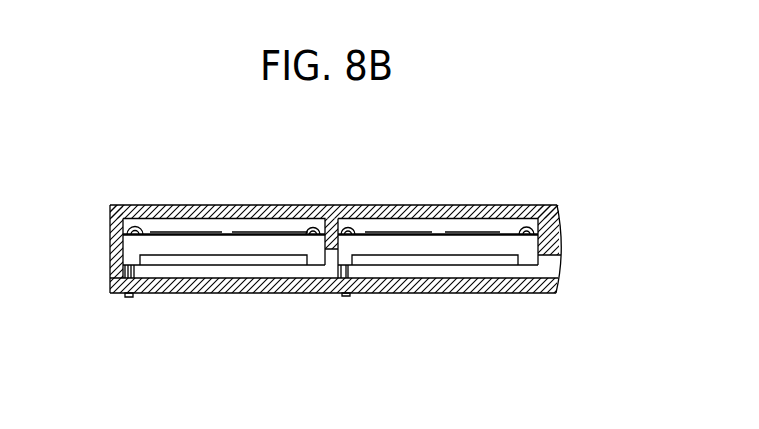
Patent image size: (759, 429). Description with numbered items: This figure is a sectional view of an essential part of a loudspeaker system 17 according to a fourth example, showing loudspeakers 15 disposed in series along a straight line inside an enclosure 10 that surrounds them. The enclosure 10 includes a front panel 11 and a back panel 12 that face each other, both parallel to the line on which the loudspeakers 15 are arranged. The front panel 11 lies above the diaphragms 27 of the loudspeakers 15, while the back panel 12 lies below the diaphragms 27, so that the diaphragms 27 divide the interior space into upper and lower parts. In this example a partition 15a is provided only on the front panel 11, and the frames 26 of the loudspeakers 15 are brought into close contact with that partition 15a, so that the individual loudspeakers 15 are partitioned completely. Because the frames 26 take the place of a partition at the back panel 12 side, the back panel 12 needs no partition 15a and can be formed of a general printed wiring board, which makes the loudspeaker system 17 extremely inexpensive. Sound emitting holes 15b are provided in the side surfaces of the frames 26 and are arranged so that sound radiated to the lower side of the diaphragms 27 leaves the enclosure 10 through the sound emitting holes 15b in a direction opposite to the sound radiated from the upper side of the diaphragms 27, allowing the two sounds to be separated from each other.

The enclosure 10 is at (512, 300).
The front panel 11 is at (472, 214).
The back panel 12 is at (173, 293).
The loudspeaker 15 is at (330, 248).
The partition 15a is at (339, 220).
The sound emitting hole 15b is at (392, 258).
The loudspeaker system 17 is at (292, 180).
The frame 26 is at (158, 248).
The diaphragm 27 is at (183, 227).